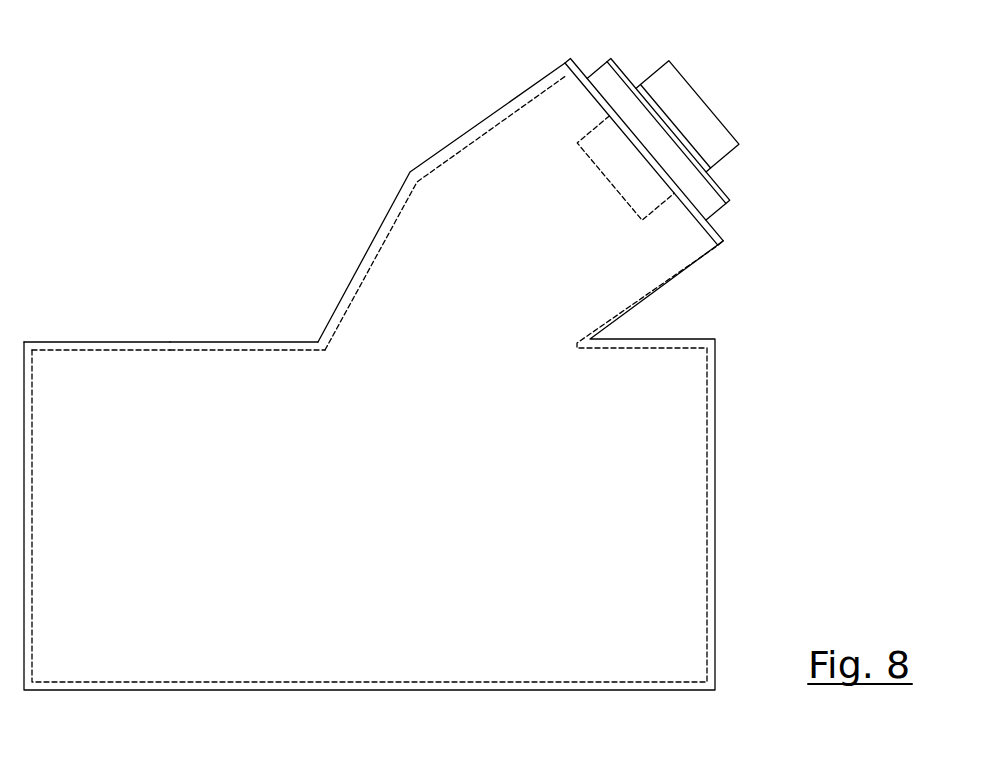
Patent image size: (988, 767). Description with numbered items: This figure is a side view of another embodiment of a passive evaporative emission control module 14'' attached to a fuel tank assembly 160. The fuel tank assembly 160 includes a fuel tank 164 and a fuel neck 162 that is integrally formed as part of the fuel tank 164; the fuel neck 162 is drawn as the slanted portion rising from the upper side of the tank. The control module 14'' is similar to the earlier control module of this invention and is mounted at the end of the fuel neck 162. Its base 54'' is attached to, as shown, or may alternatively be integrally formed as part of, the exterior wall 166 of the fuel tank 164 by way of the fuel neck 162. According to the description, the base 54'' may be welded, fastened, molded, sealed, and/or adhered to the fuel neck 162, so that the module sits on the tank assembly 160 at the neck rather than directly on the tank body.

The fuel tank assembly 160 is at (204, 201).
The fuel neck 162 is at (362, 258).
The fuel tank 164 is at (233, 342).
The exterior wall 166 is at (115, 345).
The base 54'' is at (645, 133).
The passive evaporative emission control module 14'' is at (698, 131).